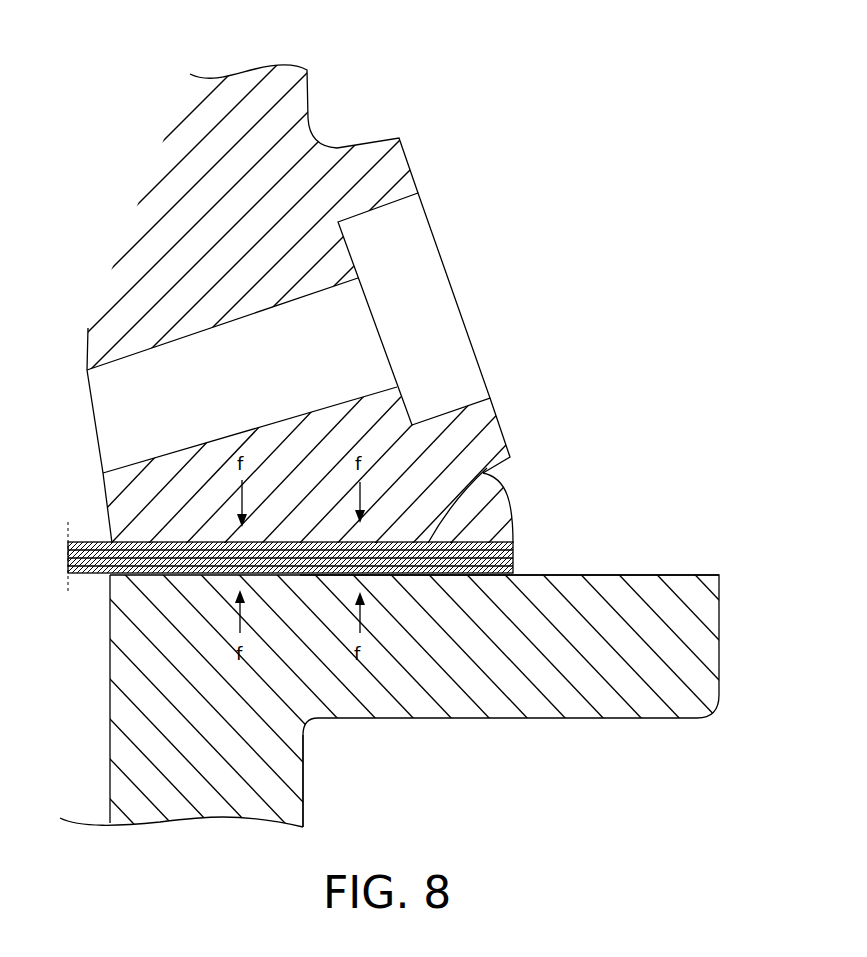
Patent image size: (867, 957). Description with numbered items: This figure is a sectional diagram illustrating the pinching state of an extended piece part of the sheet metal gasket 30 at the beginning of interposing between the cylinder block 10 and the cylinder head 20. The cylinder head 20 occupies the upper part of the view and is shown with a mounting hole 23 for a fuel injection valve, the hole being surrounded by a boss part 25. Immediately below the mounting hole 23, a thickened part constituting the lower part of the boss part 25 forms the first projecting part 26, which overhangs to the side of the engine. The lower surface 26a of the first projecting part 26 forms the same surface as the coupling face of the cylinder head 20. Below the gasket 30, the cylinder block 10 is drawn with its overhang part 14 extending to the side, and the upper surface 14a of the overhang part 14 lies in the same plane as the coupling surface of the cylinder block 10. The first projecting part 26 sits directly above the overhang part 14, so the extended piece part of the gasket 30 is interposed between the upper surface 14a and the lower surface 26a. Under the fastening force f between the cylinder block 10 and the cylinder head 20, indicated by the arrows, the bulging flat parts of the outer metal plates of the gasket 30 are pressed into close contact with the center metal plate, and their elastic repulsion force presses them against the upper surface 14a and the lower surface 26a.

The cylinder head 20 is at (332, 118).
The boss part 25 is at (393, 163).
The mounting hole 23 is at (435, 293).
The first projecting part 26 is at (493, 520).
The lower surface of the first projecting part 26a is at (487, 497).
The sheet metal gasket 30 is at (522, 558).
The overhang part 14 is at (503, 703).
The upper surface of the overhang part 14a is at (677, 575).
The cylinder block 10 is at (312, 777).